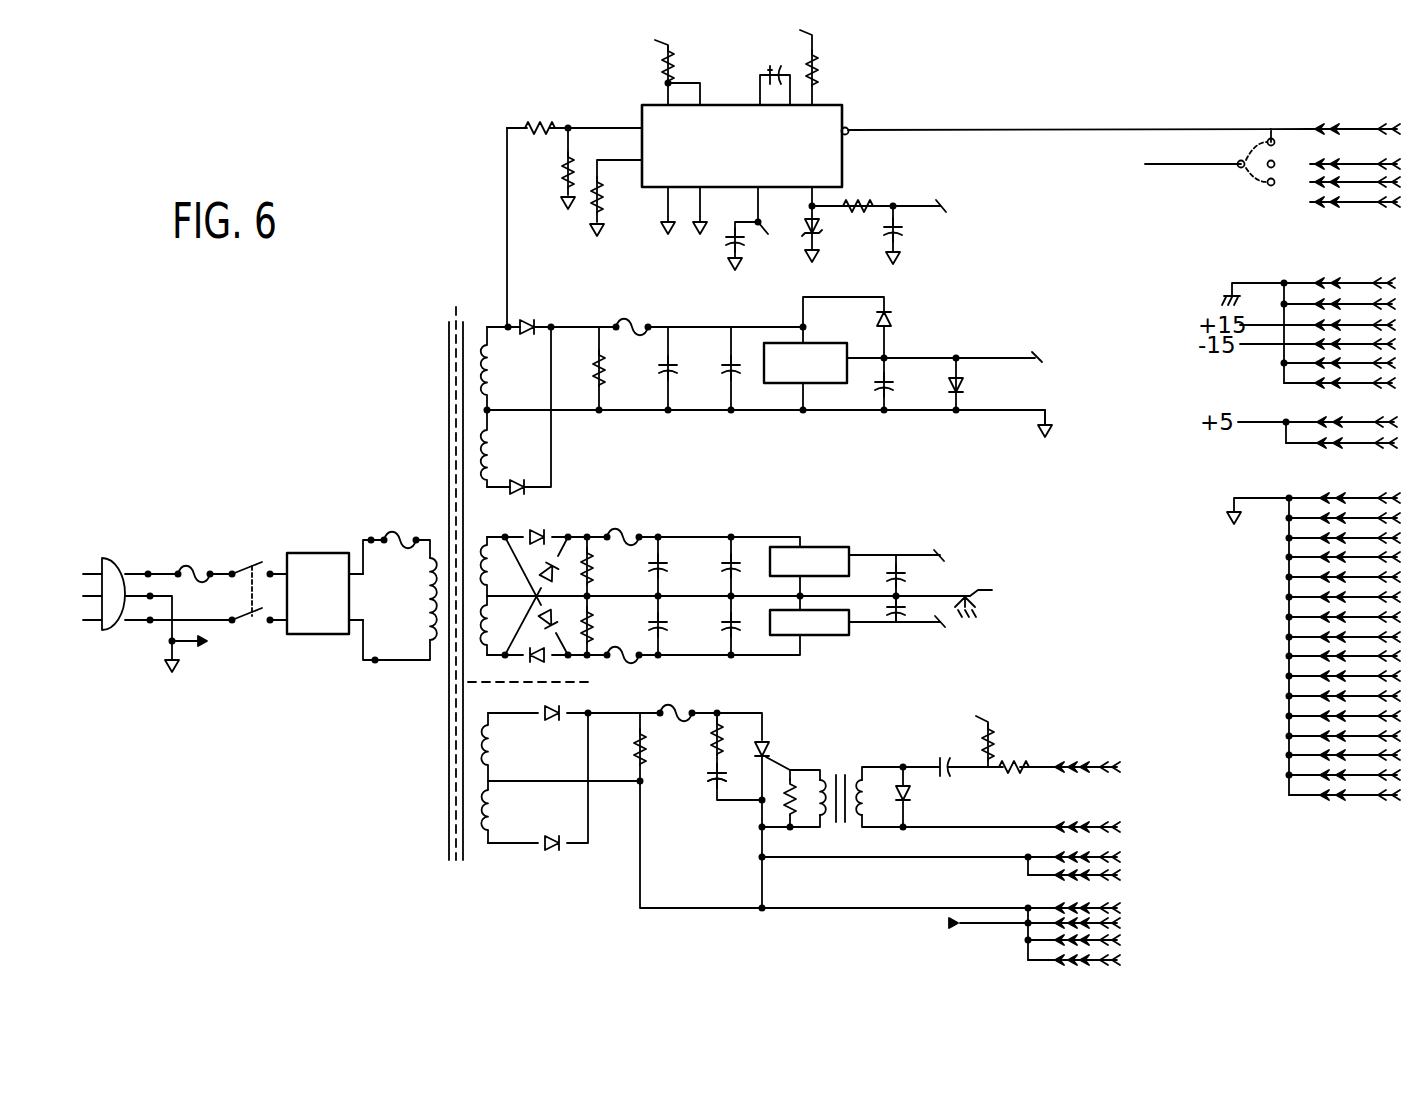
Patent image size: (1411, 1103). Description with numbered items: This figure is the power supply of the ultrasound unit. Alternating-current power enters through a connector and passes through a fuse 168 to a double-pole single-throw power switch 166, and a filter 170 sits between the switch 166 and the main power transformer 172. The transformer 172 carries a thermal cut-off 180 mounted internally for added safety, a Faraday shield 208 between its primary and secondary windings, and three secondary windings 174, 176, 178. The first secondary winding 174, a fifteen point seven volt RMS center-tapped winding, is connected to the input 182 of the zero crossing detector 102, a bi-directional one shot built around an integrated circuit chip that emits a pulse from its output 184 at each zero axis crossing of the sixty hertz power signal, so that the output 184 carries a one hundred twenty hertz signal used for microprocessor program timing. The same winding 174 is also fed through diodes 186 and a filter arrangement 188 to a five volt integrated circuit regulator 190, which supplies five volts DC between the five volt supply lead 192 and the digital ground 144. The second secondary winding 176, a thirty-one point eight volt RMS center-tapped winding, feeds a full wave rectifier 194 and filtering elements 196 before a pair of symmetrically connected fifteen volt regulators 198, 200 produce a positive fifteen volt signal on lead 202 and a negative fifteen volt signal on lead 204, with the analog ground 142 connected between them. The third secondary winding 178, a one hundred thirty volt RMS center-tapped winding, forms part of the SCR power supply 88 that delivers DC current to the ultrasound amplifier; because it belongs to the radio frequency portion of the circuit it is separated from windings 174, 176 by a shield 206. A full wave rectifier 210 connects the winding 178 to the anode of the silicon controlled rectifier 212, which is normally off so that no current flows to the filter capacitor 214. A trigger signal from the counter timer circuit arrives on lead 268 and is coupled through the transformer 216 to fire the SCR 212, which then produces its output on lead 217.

The zero crossing detector 102 is at (637, 110).
The input 182 is at (641, 140).
The output 184 is at (850, 134).
The power switch 166 is at (254, 556).
The fuse 168 is at (192, 566).
The filter 170 is at (336, 552).
The thermal cut-off 180 is at (403, 537).
The main power transformer 172 is at (441, 353).
The Faraday shield 208 is at (456, 408).
The first secondary winding 174 is at (482, 384).
The diodes 186 is at (524, 321).
The filter arrangement 188 is at (652, 412).
The 5 volt integrated circuit regulator 190 is at (820, 343).
The 5 volt DC supply lead 192 is at (1012, 357).
The digital ground 144 is at (1026, 408).
The second secondary winding 176 is at (487, 574).
The full wave rectifier 194 is at (553, 527).
The filtering elements 196 is at (688, 536).
The 15 volt regulator 198 is at (827, 546).
The 15 volt regulator 200 is at (833, 636).
The lead 202 is at (925, 553).
The lead 204 is at (932, 624).
The analog ground 142 is at (978, 590).
The shield 206 is at (488, 682).
The third secondary winding 178 is at (488, 845).
The full wave rectifier 210 is at (528, 845).
The SCR power supply 88 is at (620, 856).
The silicon controlled rectifier 212 is at (769, 742).
The filter capacitor 214 is at (714, 789).
The transformer 216 is at (846, 760).
The lead 217 is at (967, 857).
The lead 268 is at (1080, 766).